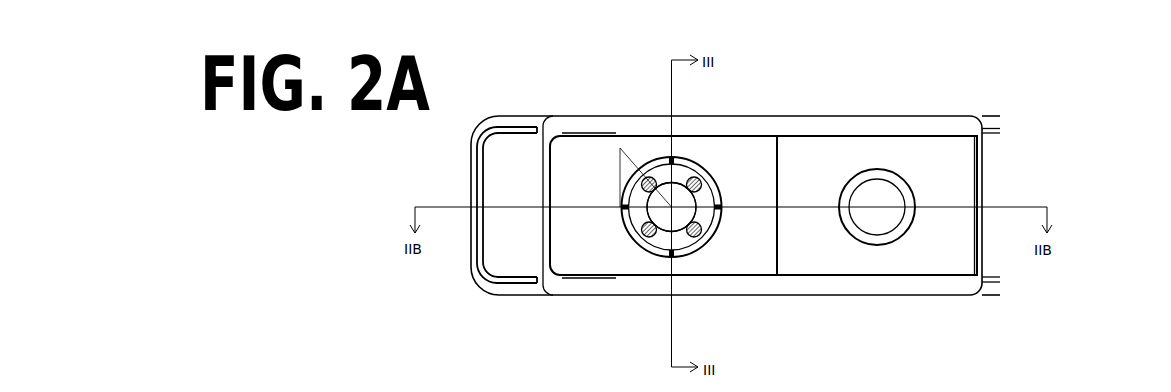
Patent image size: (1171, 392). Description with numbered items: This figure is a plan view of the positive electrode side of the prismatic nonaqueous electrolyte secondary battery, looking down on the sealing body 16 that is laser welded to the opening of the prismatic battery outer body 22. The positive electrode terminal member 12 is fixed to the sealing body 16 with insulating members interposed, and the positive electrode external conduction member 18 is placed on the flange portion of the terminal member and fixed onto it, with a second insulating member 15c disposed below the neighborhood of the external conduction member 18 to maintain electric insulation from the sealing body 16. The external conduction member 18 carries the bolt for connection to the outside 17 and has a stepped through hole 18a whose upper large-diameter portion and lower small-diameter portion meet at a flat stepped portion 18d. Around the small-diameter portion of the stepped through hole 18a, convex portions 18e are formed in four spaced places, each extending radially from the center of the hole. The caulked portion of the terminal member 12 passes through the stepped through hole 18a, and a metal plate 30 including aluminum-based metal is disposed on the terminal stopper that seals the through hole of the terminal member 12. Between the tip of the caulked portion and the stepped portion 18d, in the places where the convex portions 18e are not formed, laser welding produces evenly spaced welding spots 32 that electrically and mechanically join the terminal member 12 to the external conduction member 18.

The positive electrode terminal member 12 is at (650, 175).
The second insulating member 15c is at (955, 286).
The sealing body 16 is at (530, 237).
The bolt for connection to the outside 17 is at (878, 222).
The positive electrode external conduction member 18 is at (573, 160).
The stepped through hole 18a is at (680, 240).
The stepped portion 18d is at (699, 246).
The convex portions 18e is at (668, 171).
The battery outer body 22 is at (488, 287).
The metal plate 30 is at (669, 240).
The welding spots 32 is at (701, 174).